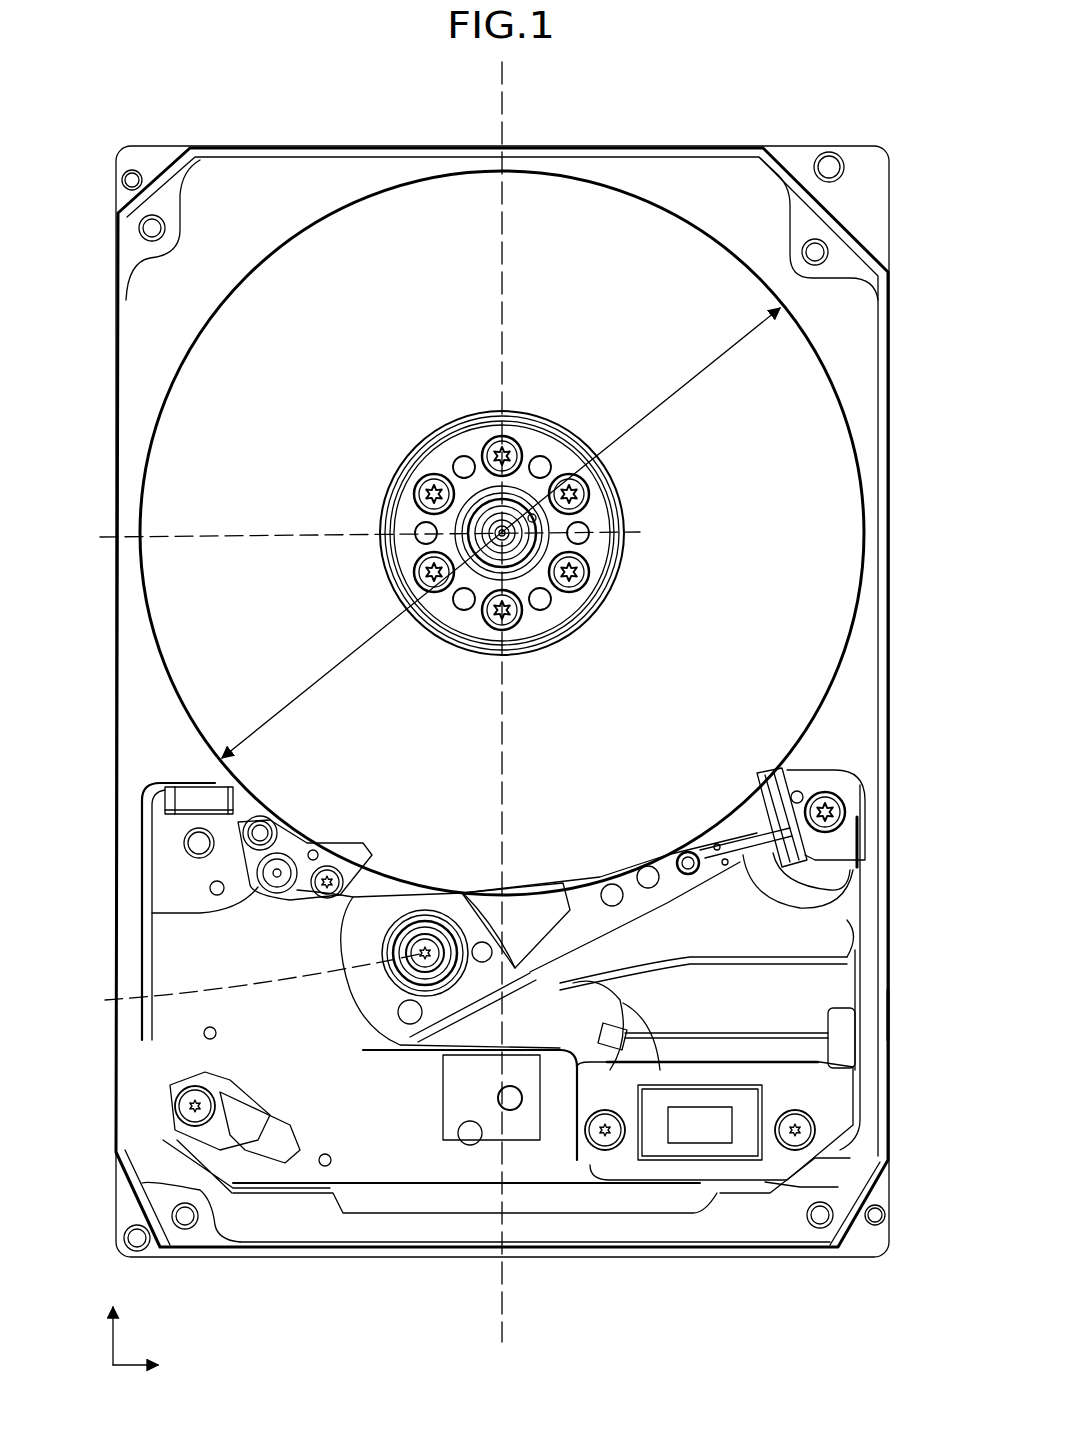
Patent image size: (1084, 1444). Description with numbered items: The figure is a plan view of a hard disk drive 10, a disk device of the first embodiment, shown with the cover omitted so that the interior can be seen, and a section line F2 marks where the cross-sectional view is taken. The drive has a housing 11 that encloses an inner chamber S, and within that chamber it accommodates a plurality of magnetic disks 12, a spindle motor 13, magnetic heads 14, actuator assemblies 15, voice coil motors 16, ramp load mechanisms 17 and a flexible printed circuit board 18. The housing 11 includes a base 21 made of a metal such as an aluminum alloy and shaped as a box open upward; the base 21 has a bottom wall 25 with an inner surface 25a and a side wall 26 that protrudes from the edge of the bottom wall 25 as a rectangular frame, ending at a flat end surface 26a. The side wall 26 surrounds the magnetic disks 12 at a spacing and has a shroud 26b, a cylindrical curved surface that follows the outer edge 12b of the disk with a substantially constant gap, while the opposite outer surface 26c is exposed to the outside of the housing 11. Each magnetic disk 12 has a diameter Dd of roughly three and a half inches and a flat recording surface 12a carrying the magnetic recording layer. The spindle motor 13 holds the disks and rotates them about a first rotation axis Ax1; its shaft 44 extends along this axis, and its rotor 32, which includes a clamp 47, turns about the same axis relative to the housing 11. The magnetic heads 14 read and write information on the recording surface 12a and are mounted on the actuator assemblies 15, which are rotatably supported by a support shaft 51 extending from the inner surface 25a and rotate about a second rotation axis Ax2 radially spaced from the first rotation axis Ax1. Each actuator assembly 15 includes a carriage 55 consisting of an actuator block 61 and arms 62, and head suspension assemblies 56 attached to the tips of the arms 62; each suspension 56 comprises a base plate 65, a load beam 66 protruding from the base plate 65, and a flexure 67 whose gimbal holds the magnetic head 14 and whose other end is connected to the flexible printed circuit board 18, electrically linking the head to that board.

The hard disk drive 10 is at (128, 106).
The housing 11 is at (886, 149).
The magnetic disk 12 is at (828, 485).
The recording surface 12a is at (535, 701).
The outer edge 12b is at (850, 427).
The spindle motor 13 is at (470, 494).
The magnetic head 14 is at (820, 852).
The actuator assembly 15 is at (393, 878).
The voice coil motor 16 is at (340, 956).
The ramp load mechanism 17 is at (830, 763).
The flexible printed circuit board 18 is at (660, 1070).
The base 21 is at (918, 1022).
The bottom wall 25 is at (756, 995).
The inner surface 25a is at (810, 940).
The side wall 26 is at (882, 1073).
The end surface 26a is at (502, 492).
The shroud 26b is at (622, 222).
The outer surface 26c is at (884, 1012).
The rotor 32 is at (503, 510).
The clamp 47 is at (470, 443).
The shaft 44 is at (590, 605).
The support shaft 51 is at (410, 915).
The carriage 55 is at (506, 1148).
The actuator block 61 is at (357, 1040).
The arm 62 is at (550, 930).
The head suspension assembly 56 is at (740, 1090).
The base plate 65 is at (715, 863).
The load beam 66 is at (770, 912).
The flexure 67 is at (770, 890).
The inner chamber S is at (773, 1176).
The diameter Dd is at (501, 533).
The first rotation axis Ax1 is at (347, 537).
The second rotation axis Ax2 is at (240, 983).
The line F2- F2 is at (500, 72).